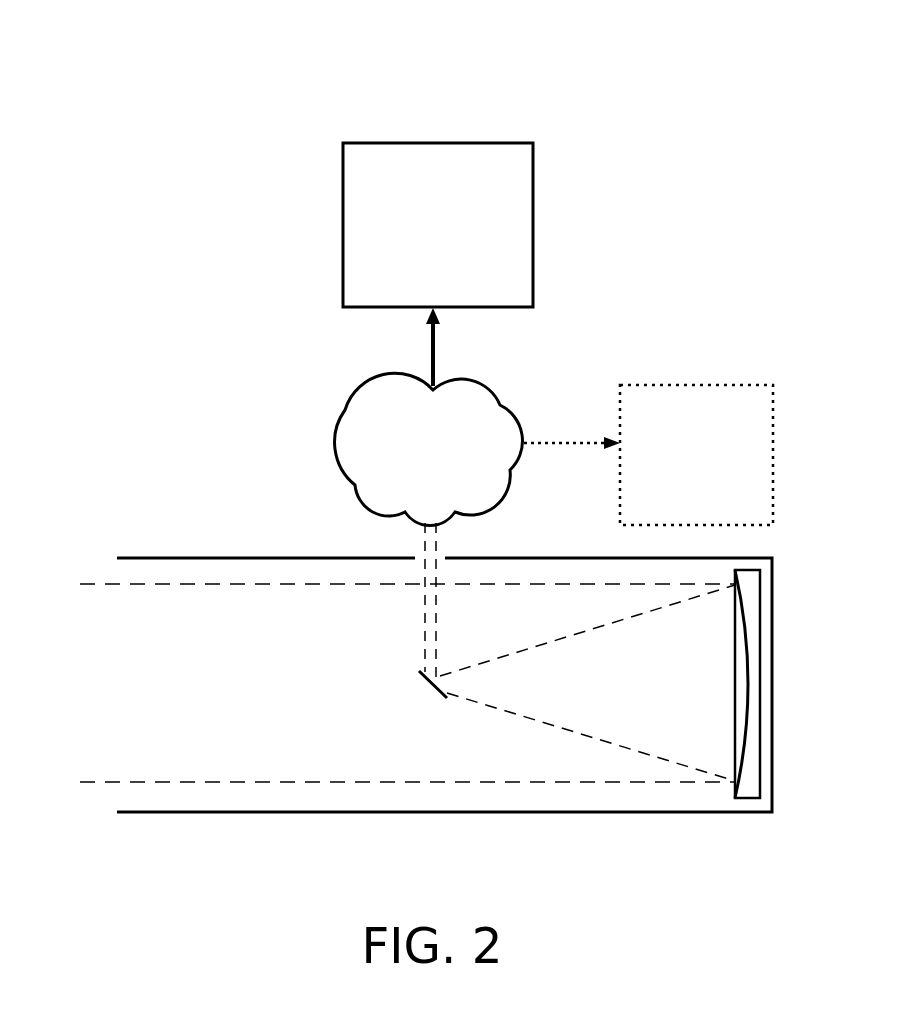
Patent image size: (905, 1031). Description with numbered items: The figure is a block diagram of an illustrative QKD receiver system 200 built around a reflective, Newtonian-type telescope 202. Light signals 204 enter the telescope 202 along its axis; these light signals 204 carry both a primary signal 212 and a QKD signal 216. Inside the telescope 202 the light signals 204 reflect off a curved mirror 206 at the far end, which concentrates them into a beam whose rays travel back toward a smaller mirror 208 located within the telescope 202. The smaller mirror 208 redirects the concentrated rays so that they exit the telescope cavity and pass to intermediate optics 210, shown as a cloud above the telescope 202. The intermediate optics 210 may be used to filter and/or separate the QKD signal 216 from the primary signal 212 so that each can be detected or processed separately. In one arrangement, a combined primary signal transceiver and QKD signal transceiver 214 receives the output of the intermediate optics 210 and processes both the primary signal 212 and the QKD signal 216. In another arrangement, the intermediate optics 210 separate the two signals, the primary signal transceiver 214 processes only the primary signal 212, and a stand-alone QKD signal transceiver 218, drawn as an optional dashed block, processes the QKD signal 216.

The QKD receiver system 200 is at (420, 75).
The reflective telescope 202 is at (243, 557).
The light signals 204 is at (166, 586).
The curved mirror 206 is at (747, 705).
The smaller mirror 208 is at (430, 688).
The intermediate optics 210 is at (429, 449).
The primary signal 212 is at (435, 363).
The primary signal transceiver 214 is at (438, 225).
The QKD signal 216 is at (535, 442).
The stand-alone QKD signal transceiver 218 is at (696, 455).